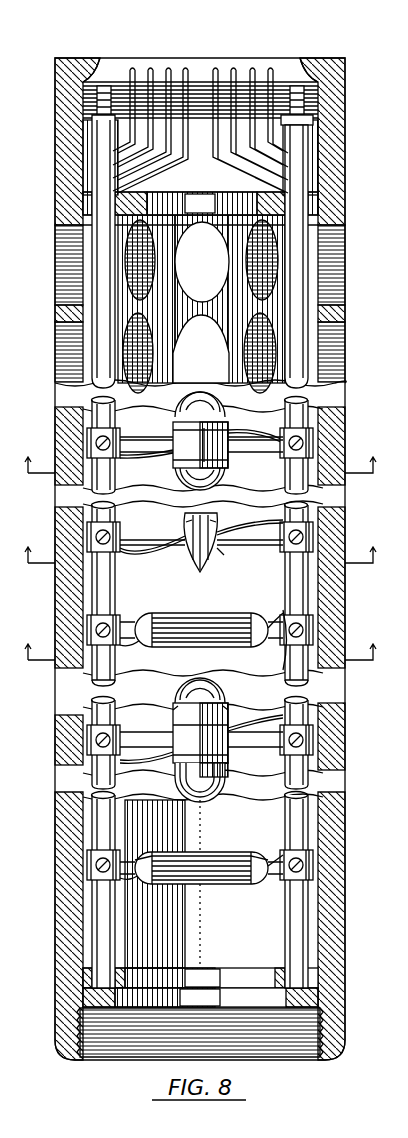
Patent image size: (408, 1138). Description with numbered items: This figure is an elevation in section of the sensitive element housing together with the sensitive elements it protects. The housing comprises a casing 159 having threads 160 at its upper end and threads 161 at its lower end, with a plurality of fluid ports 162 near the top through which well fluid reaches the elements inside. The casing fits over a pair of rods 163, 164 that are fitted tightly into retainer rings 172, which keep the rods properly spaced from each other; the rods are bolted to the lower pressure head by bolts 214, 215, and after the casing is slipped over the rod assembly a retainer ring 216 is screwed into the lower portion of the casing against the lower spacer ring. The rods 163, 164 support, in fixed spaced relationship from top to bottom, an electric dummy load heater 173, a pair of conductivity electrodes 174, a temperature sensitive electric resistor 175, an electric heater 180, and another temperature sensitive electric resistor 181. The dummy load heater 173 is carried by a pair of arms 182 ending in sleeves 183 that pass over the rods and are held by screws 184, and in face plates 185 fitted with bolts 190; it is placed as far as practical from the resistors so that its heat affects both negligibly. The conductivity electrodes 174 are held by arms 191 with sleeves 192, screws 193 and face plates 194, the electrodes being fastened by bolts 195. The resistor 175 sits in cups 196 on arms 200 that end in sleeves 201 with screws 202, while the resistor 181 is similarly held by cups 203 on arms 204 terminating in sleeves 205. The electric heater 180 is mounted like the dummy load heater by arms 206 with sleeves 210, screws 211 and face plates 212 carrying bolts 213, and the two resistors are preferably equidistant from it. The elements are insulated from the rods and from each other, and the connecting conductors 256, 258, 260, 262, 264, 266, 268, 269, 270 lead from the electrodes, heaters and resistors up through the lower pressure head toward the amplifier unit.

The casing 159 is at (336, 218).
The threads 160 is at (78, 60).
The threads 161 is at (93, 1058).
The fluid ports 162 is at (201, 304).
The rod 163 is at (100, 158).
The rod 164 is at (298, 160).
The retainer rings 172 is at (200, 590).
The electric dummy load heater 173 is at (195, 485).
The conductivity electrodes 174 is at (200, 553).
The temperature sensitive electric resistor 175 is at (222, 618).
The electric heater 180 is at (225, 800).
The temperature sensitive electric resistor 181 is at (186, 884).
The arms 182 is at (145, 437).
The sleeves 183 is at (200, 454).
The screws 184 is at (118, 415).
The face plates 185 is at (225, 420).
The bolts 190 is at (200, 441).
The arms 191 is at (140, 538).
The sleeves 192 is at (200, 594).
The screws 193 is at (103, 546).
The face plates 194 is at (186, 530).
The bolts 195 is at (218, 552).
The cups 196 is at (150, 620).
The arms 200 is at (128, 620).
The sleeves 201 is at (200, 620).
The screws 202 is at (202, 594).
The cups 203 is at (165, 854).
The arms 204 is at (132, 860).
The sleeves 205 is at (200, 890).
The arms 206 is at (137, 736).
The sleeves 210 is at (280, 520).
The screws 211 is at (200, 743).
The face plates 212 is at (175, 708).
The bolts 213 is at (200, 720).
The bolt 214 is at (104, 86).
The bolt 215 is at (300, 86).
The retainer ring 216 is at (200, 997).
The conductor 256 is at (132, 68).
The conductor 258 is at (150, 68).
The conductor 260 is at (252, 68).
The conductor 262 is at (233, 68).
The conductor 264 is at (168, 68).
The conductor 266 is at (185, 68).
The conductor 268 is at (278, 855).
The conductor 269 is at (215, 68).
The conductor 270 is at (270, 68).